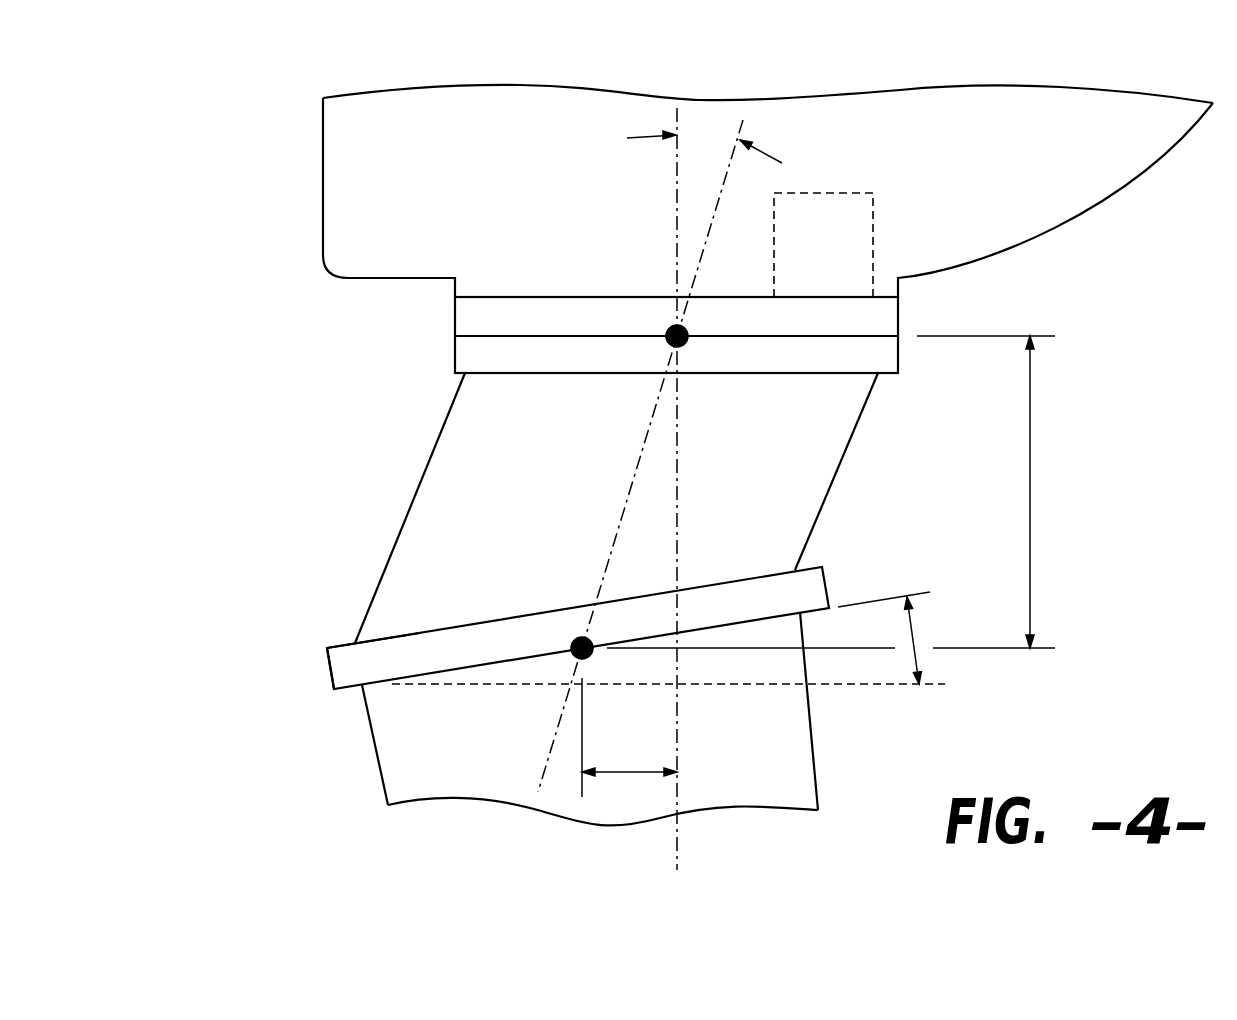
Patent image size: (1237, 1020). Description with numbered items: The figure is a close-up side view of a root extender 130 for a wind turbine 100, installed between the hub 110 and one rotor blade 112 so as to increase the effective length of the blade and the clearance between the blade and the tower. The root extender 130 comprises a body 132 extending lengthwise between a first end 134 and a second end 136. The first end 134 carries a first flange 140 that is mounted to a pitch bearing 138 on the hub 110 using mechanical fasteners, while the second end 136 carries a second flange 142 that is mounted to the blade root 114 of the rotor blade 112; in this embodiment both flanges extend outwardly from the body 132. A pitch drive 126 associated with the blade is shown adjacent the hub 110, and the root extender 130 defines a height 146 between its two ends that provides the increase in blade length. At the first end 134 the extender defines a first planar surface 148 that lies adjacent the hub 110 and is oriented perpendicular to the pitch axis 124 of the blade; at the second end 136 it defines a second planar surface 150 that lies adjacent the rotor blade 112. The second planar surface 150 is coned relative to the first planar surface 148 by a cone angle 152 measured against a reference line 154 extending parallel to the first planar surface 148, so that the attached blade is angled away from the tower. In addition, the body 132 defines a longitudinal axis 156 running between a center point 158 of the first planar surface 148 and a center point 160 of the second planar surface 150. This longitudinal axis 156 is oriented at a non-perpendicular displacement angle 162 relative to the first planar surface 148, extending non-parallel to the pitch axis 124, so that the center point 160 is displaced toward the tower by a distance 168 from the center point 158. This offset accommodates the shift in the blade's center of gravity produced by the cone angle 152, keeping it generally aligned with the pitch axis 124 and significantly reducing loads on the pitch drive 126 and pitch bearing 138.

The wind turbine 100 is at (266, 140).
The hub 110 is at (487, 87).
The rotor blade 112 is at (380, 787).
The blade root 114 is at (383, 748).
The pitch axis 124 is at (680, 797).
The pitch drive 126 is at (823, 190).
The root extender 130 is at (594, 508).
The body 132 is at (460, 487).
The first end 134 is at (827, 377).
The second end 136 is at (393, 637).
The pitch bearing 138 is at (900, 317).
The first flange 140 is at (900, 347).
The second flange 142 is at (827, 587).
The height 146 is at (1030, 488).
The first planar surface 148 is at (475, 335).
The second planar surface 150 is at (380, 682).
The cone angle 152 is at (917, 633).
The reference line 154 is at (866, 685).
The longitudinal axis 156 is at (550, 757).
The center point of the first planar surface 158 is at (672, 327).
The center point of the second planar surface 160 is at (577, 633).
The displacement angle 162 is at (632, 137).
The distance 168 is at (630, 773).